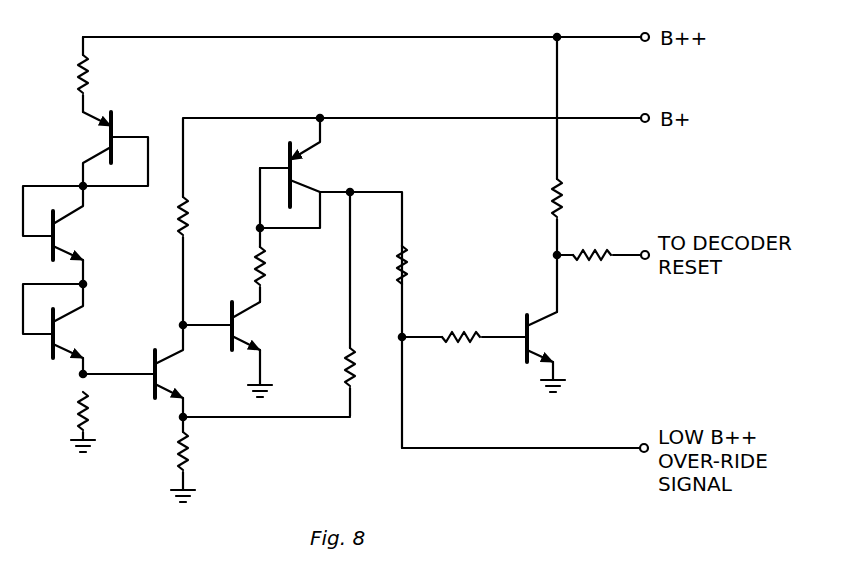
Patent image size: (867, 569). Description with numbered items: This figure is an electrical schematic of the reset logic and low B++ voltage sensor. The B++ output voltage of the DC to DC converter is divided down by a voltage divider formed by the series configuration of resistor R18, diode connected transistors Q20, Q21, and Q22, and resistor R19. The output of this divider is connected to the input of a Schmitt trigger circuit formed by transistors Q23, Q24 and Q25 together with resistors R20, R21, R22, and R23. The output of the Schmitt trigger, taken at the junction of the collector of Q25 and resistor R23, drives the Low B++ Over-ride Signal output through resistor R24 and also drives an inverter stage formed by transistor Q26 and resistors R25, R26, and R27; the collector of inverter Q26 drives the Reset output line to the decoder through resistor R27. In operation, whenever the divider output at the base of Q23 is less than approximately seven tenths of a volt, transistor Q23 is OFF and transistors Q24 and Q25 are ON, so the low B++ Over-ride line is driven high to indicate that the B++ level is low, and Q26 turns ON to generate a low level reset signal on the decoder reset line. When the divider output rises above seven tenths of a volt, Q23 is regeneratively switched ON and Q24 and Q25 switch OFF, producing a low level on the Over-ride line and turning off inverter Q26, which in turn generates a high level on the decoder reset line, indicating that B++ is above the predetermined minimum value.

The resistor R18 is at (93, 76).
The resistor R19 is at (93, 413).
The resistor R20 is at (192, 453).
The resistor R21 is at (192, 218).
The resistor R22 is at (254, 268).
The resistor R23 is at (343, 369).
The resistor R24 is at (410, 267).
The resistor R25 is at (462, 330).
The resistor R26 is at (549, 200).
The resistor R27 is at (593, 247).
The diode connected transistor Q20 is at (90, 139).
The diode connected transistor Q21 is at (70, 237).
The diode connected transistor Q22 is at (70, 334).
The transistor Q23 is at (166, 375).
The transistor Q24 is at (248, 327).
The transistor Q25 is at (305, 171).
The inverter transistor Q26 is at (538, 339).